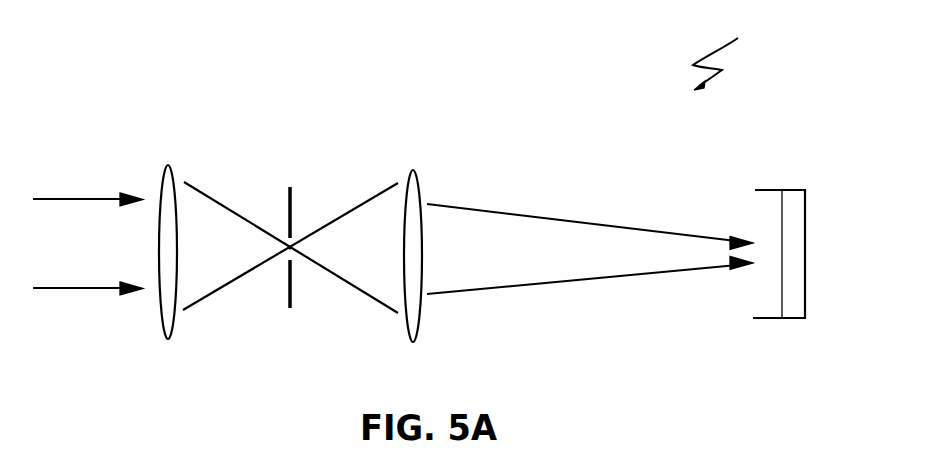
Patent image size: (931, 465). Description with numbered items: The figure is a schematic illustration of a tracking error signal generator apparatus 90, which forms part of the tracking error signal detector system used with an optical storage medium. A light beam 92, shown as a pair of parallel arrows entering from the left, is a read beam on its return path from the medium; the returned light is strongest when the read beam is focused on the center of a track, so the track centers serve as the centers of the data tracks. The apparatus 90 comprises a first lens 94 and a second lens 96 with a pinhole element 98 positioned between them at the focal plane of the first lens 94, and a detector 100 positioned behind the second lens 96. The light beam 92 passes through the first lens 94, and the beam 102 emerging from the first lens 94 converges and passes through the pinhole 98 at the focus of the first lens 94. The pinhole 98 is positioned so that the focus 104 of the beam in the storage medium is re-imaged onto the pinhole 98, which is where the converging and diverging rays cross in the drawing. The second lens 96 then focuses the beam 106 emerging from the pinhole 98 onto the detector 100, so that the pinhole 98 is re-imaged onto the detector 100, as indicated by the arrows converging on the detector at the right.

The tracking error signal generator apparatus 90 is at (722, 52).
The light beam 92 is at (60, 197).
The first lens 94 is at (162, 183).
The second lens 96 is at (420, 187).
The pinhole element 98 is at (293, 198).
The detector 100 is at (807, 250).
The beam 102 is at (218, 296).
The focus 104 is at (293, 254).
The beam 106 is at (380, 308).